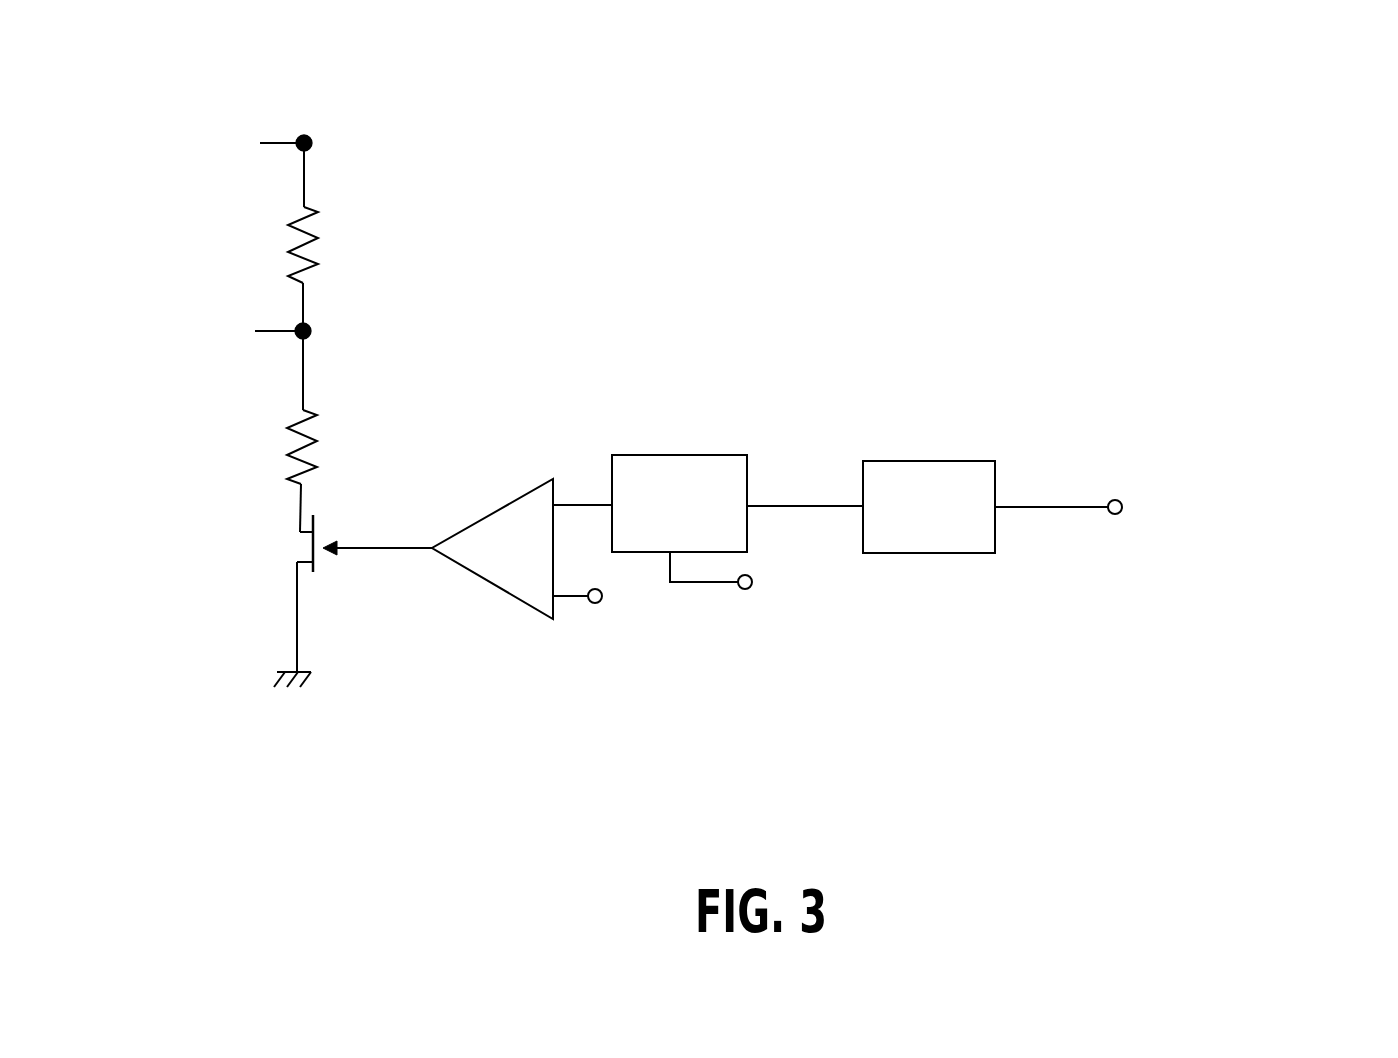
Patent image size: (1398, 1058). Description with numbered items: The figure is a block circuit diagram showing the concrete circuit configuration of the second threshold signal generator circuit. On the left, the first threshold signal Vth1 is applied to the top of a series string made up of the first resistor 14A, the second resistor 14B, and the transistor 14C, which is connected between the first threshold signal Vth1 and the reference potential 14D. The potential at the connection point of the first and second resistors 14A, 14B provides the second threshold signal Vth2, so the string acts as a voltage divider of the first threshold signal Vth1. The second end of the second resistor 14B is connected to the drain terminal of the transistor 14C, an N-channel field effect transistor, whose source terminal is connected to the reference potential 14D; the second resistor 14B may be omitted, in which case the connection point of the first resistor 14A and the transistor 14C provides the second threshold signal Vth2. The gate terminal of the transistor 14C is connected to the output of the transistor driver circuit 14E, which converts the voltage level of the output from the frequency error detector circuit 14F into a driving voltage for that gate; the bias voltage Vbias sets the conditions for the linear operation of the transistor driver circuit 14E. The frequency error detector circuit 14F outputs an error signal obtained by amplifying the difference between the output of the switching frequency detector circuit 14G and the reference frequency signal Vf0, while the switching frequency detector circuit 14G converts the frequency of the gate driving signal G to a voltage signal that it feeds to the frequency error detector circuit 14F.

The first resistor 14A is at (318, 252).
The second resistor 14B is at (267, 452).
The transistor 14C is at (315, 572).
The reference potential 14D is at (263, 670).
The transistor driver circuit 14E is at (492, 501).
The frequency error detector circuit 14F is at (670, 453).
The switching frequency detector circuit 14G is at (938, 460).
The first threshold signal Vth1 is at (260, 127).
The second threshold signal Vth2 is at (255, 313).
The bias voltage Vbias is at (595, 600).
The reference frequency signal Vf0 is at (758, 585).
The gate driving signal G is at (1150, 519).